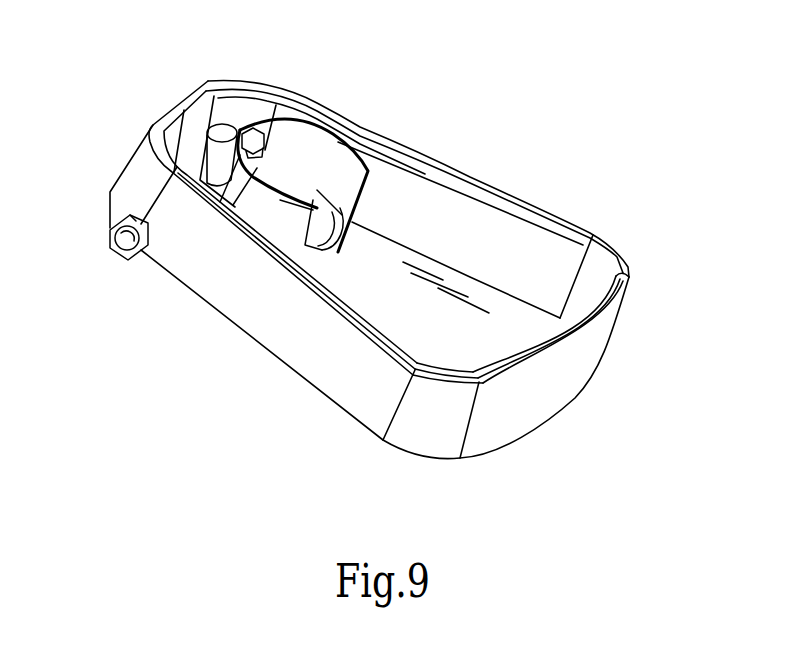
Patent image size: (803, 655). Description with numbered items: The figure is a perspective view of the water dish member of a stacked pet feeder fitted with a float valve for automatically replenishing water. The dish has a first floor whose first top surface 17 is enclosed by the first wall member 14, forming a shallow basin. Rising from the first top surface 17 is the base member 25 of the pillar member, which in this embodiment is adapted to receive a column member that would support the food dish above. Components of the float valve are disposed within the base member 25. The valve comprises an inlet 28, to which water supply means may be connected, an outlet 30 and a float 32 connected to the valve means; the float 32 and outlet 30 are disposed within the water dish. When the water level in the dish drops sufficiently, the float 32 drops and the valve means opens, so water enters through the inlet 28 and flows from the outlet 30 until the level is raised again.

The first wall member 14 is at (258, 306).
The first top surface 17 is at (430, 331).
The base member 25 is at (363, 157).
The inlet 28 is at (110, 252).
The outlet 30 is at (328, 118).
The float 32 is at (318, 245).